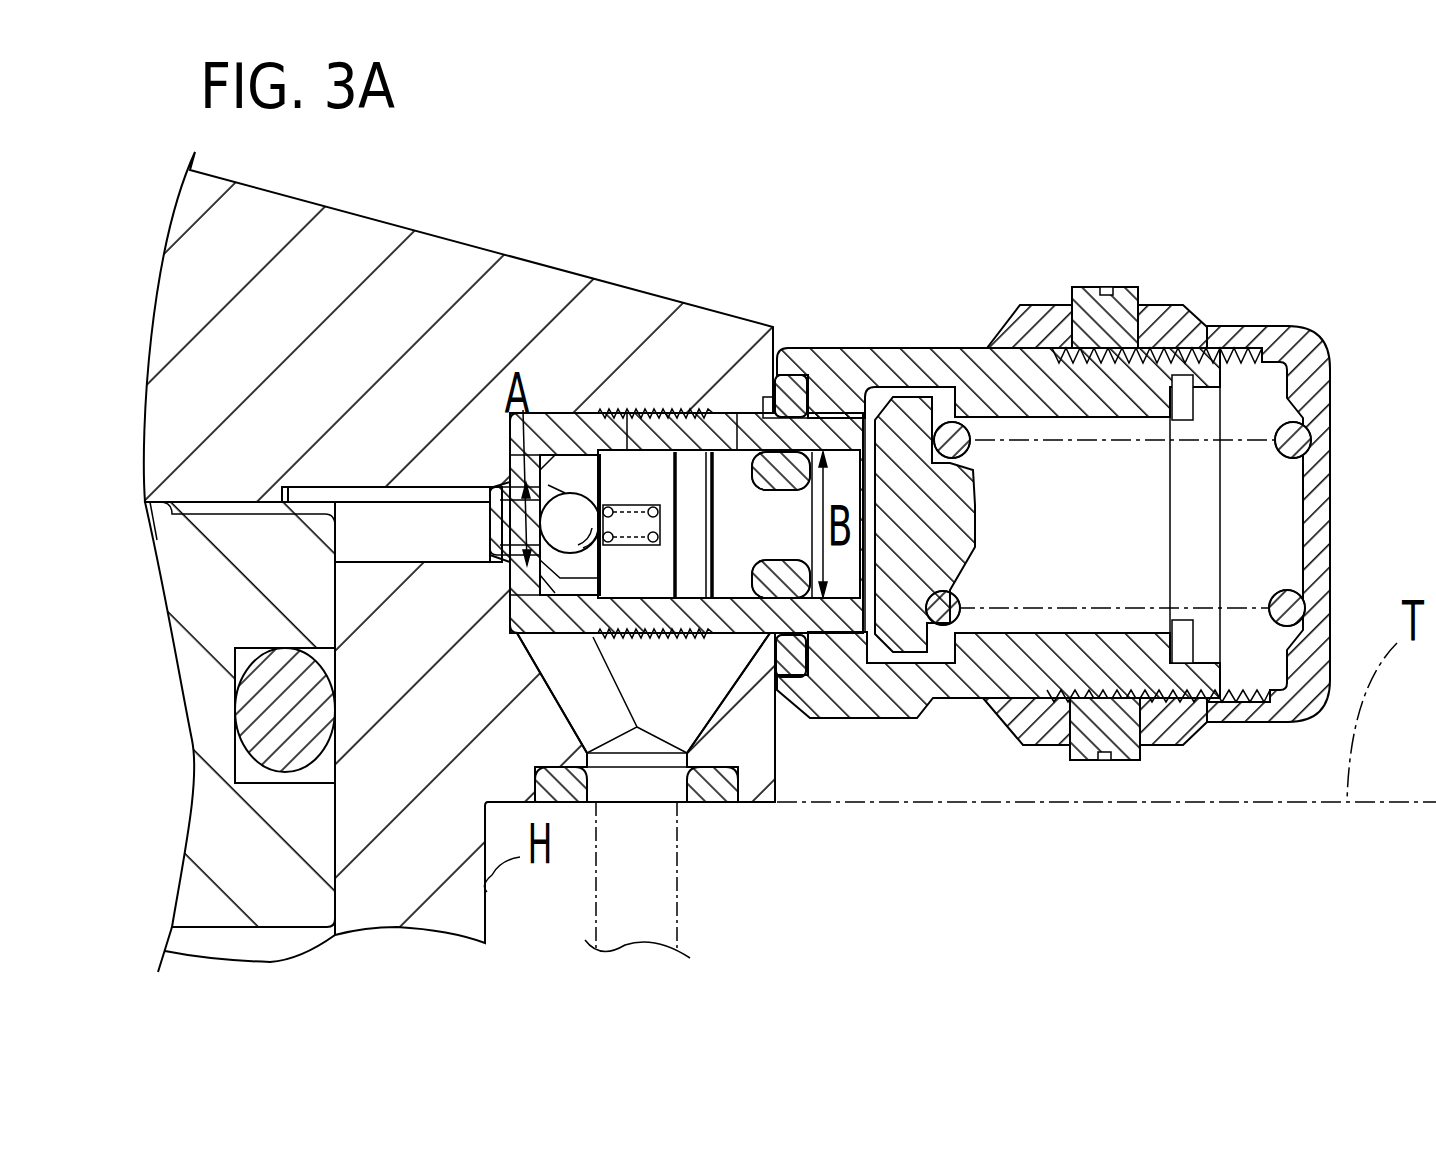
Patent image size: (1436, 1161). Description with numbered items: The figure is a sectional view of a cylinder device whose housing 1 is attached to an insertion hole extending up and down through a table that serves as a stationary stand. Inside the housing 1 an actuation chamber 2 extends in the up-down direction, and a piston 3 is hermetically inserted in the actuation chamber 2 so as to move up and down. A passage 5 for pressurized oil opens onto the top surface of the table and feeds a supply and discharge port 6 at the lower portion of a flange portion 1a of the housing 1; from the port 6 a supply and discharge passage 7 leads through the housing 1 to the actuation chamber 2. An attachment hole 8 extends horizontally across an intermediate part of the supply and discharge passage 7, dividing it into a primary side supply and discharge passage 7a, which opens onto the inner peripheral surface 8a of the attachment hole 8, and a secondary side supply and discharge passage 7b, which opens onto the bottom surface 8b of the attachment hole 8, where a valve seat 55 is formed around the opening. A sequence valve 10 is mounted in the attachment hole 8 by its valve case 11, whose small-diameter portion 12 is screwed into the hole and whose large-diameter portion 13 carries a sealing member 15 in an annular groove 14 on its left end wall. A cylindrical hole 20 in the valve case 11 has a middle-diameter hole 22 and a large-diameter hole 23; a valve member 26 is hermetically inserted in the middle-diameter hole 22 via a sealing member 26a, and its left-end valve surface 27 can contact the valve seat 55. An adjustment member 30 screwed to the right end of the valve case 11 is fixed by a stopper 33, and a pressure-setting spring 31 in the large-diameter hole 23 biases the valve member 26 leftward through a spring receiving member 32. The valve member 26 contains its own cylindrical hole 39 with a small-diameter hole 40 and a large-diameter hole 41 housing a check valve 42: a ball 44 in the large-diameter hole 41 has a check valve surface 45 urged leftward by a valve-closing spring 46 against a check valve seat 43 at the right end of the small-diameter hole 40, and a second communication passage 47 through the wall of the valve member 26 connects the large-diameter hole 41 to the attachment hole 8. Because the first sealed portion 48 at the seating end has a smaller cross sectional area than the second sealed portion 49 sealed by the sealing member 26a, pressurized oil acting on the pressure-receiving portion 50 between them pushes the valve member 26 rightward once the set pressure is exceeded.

The housing 1 is at (405, 223).
The flange portion 1a is at (733, 747).
The actuation chamber 2 is at (232, 513).
The piston 3 is at (160, 512).
The passage 5 is at (677, 903).
The supply and discharge port 6 is at (650, 783).
The supply and discharge passage 7 is at (542, 697).
The primary side supply and discharge passage 7a is at (590, 700).
The secondary side supply and discharge passage 7b is at (363, 500).
The attachment hole 8 is at (585, 400).
The inner peripheral surface 8a is at (513, 587).
The bottom surface 8b is at (507, 593).
The sequence valve 10 is at (853, 327).
The valve case 11 is at (903, 343).
The small-diameter portion 12 is at (745, 413).
The large-diameter portion 13 is at (973, 367).
The annular groove 14 is at (773, 407).
The sealing member 15 is at (790, 377).
The cylindrical hole 20 is at (643, 412).
The middle-diameter hole 22 is at (850, 657).
The large-diameter hole 23 is at (957, 660).
The valve member 26 is at (723, 444).
The sealing member 26a is at (790, 680).
The valve surface 27 is at (507, 483).
The adjustment member 30 is at (1250, 335).
The pressure-setting spring 31 is at (1300, 436).
The spring receiving member 32 is at (950, 485).
The stopper 33 is at (1120, 290).
The cylindrical hole 39 is at (503, 517).
The small-diameter hole 40 is at (490, 542).
The large-diameter hole 41 is at (628, 612).
The check valve 42 is at (688, 648).
The check valve seat 43 is at (583, 745).
The ball 44 is at (562, 470).
The check valve surface 45 is at (507, 587).
The valve-closing spring 46 is at (665, 512).
The second communication passage 47 is at (600, 462).
The first sealed portion 48 is at (510, 478).
The second sealed portion 49 is at (826, 420).
The pressure-receiving portion 50 is at (627, 410).
The valve seat 55 is at (495, 500).